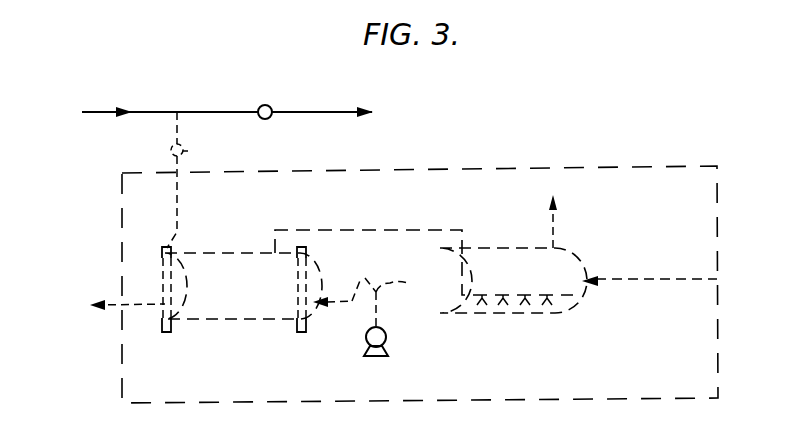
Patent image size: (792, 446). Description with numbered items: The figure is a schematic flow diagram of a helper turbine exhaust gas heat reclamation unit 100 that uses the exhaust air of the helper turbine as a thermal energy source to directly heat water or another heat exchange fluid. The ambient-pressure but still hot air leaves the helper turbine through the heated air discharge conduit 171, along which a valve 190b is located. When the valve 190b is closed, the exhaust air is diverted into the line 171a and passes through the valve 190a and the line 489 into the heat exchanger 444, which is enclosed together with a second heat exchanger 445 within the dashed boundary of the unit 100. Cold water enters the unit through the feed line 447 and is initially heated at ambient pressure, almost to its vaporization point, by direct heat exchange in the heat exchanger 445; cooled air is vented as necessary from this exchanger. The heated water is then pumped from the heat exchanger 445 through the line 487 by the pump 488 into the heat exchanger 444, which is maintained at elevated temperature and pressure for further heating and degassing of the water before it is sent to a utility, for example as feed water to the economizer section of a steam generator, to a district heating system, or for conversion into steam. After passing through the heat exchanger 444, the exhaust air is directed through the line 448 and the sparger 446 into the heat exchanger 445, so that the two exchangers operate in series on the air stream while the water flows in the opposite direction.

The heat reclamation unit 100 is at (722, 281).
The heated air discharge conduit 171 is at (103, 110).
The line 171a is at (174, 116).
The valve 190a is at (190, 150).
The valve 190b is at (261, 104).
The line 489 is at (182, 228).
The heat exchanger 444 is at (242, 299).
The line 487 is at (360, 281).
The pump 488 is at (388, 346).
The line 448 is at (358, 230).
The heat exchanger 445 is at (518, 278).
The sparger 446 is at (510, 310).
The feed line 447 is at (622, 281).